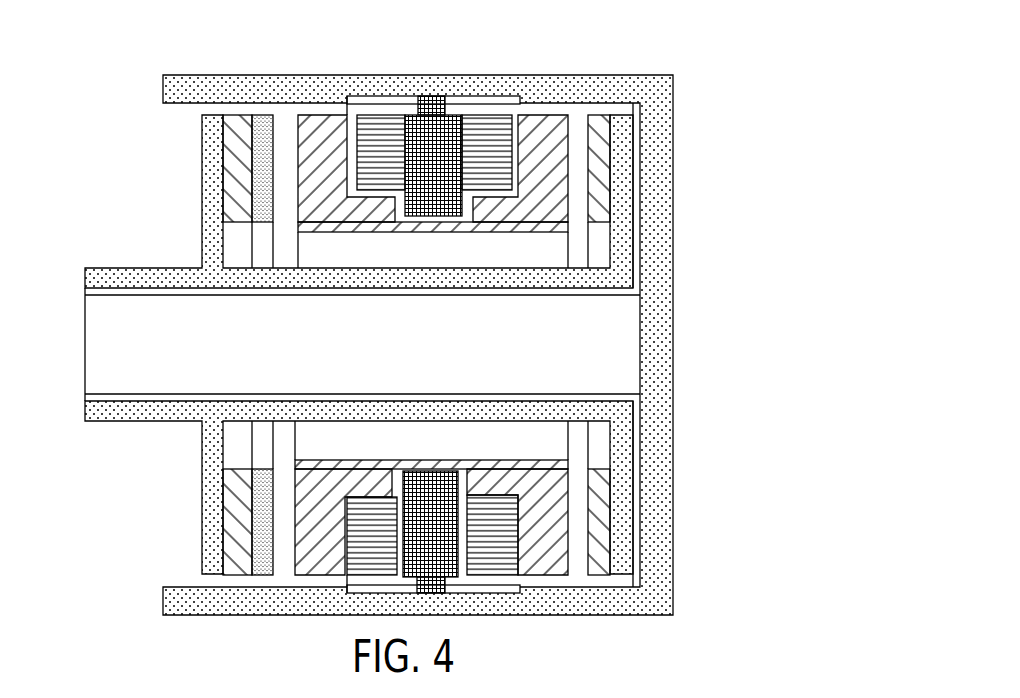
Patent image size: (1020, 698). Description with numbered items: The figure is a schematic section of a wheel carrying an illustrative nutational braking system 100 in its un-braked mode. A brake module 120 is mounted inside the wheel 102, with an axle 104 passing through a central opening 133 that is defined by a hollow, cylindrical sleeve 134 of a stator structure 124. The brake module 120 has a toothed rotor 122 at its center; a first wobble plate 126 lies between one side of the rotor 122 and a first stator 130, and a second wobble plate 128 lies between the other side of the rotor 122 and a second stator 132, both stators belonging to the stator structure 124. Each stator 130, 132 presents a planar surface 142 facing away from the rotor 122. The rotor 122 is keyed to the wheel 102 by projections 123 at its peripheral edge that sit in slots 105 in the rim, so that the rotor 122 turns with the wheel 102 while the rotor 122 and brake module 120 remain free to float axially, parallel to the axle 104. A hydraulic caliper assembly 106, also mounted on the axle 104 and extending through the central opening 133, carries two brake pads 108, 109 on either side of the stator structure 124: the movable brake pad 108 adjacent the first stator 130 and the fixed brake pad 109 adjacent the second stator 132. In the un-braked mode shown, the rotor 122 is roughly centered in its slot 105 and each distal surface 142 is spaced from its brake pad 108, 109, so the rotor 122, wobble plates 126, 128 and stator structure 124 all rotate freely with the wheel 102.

The braking system 100 is at (72, 124).
The wheel 102 is at (657, 132).
The axle 104 is at (97, 343).
The slots 105 is at (478, 100).
The hydraulic caliper assembly 106 is at (113, 278).
The brake pad 108 is at (263, 117).
The brake pad 109 is at (598, 122).
The brake module 120 is at (598, 637).
The rotor 122 is at (435, 212).
The projections 123 is at (433, 100).
The stator structure 124 is at (543, 262).
The first wobble plate 126 is at (373, 150).
The second wobble plate 128 is at (492, 132).
The first stator 130 is at (320, 117).
The second stator 132 is at (543, 128).
The central opening 133 is at (315, 442).
The cylindrical sleeve 134 is at (358, 225).
The planar surface 142 is at (275, 157).